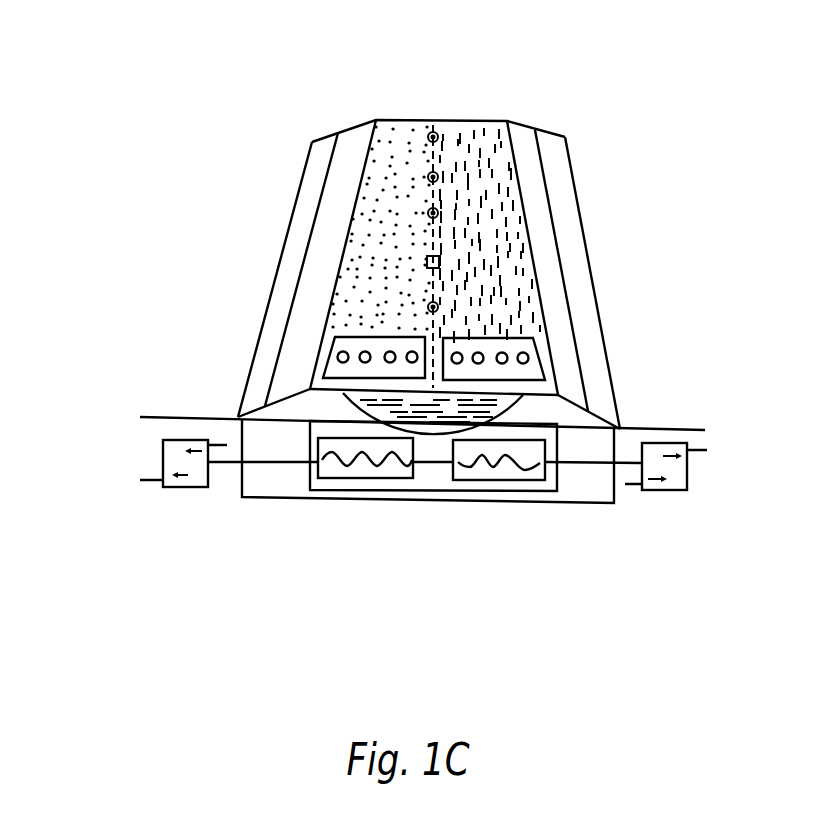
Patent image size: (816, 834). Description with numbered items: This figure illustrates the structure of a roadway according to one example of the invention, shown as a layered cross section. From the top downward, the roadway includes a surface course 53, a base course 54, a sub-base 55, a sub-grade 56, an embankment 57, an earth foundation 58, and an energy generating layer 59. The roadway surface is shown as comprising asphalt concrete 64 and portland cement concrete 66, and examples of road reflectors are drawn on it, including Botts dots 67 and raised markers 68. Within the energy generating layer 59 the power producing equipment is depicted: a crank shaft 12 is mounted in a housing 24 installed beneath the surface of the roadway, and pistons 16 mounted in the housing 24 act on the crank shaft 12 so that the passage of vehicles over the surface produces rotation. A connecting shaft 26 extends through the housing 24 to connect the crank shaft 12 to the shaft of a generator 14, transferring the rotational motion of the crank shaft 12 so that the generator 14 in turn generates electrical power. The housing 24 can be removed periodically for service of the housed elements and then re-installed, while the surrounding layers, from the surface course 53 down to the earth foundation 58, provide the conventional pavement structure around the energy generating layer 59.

The crank shaft 12 is at (527, 472).
The generator 14 is at (163, 452).
The piston 16 is at (505, 353).
The housing 24 is at (477, 480).
The connecting shaft 26 is at (590, 468).
The surface course 53 is at (373, 207).
The base course 54 is at (307, 254).
The sub-base 55 is at (265, 310).
The sub-grade 56 is at (267, 413).
The embankment 57 is at (528, 426).
The earth foundation 58 is at (263, 480).
The energy generating layer 59 is at (348, 547).
The asphalt concrete 64 is at (407, 130).
The portland cement concrete 66 is at (482, 137).
The Botts dots 67 is at (445, 177).
The raised markers 68 is at (440, 262).